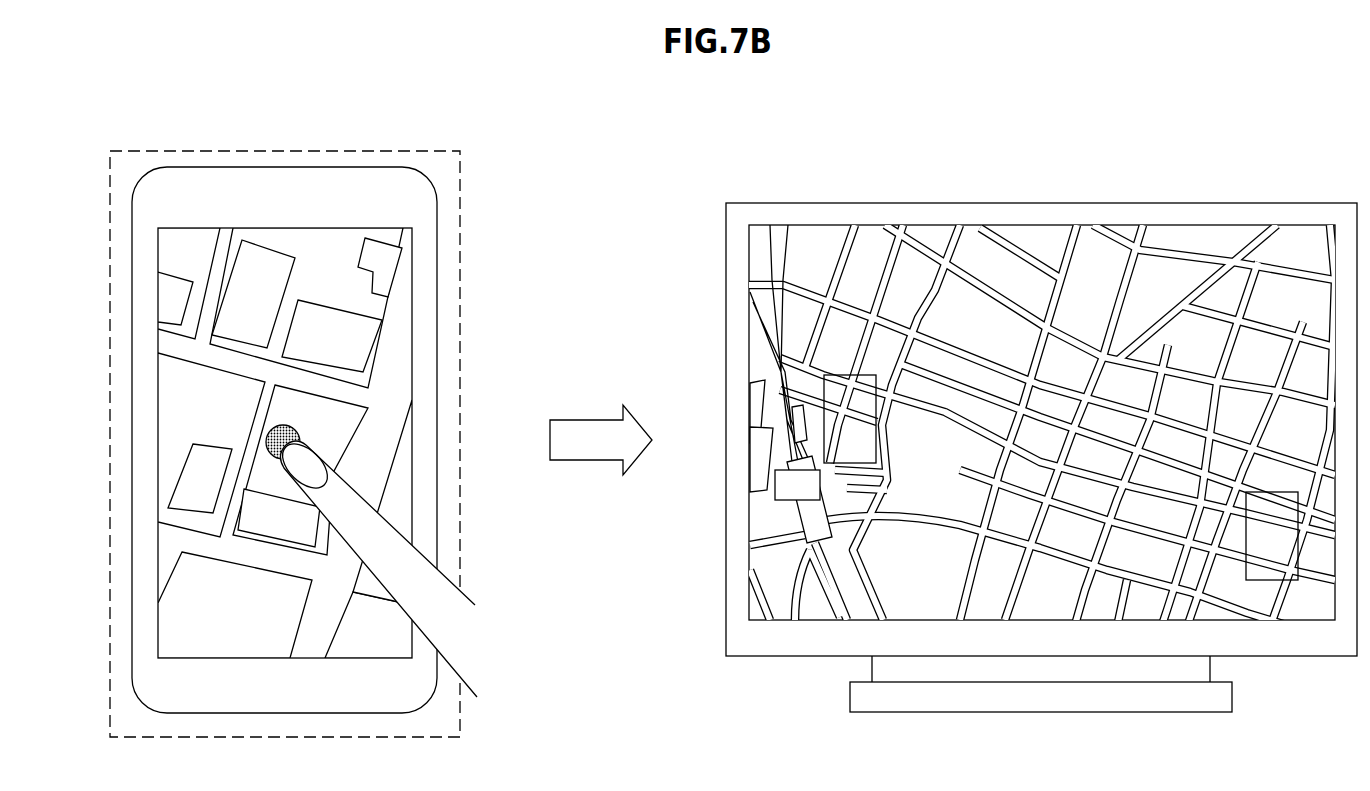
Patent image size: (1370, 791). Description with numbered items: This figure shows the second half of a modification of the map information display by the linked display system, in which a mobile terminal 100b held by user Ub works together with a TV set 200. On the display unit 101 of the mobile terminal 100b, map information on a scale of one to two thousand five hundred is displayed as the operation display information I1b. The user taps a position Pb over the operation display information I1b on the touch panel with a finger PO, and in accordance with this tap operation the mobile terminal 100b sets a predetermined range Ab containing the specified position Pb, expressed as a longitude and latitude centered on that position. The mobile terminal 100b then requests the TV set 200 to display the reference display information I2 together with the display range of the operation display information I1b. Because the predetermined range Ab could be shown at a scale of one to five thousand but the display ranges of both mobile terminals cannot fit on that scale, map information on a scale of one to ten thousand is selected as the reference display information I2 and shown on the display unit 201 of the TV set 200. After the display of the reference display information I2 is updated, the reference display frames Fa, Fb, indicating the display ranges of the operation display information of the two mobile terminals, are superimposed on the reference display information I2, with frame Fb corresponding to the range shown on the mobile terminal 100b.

The mobile terminal 100b is at (282, 167).
The display unit 101 is at (391, 227).
The operation display information I1b is at (397, 317).
The predetermined range Ab is at (460, 337).
The position Pb is at (266, 440).
The finger (pointing object) PO is at (387, 521).
The TV set 200 is at (1116, 203).
The display unit 201 is at (1237, 225).
The reference display information I2 is at (765, 269).
The reference display frame Fa is at (823, 418).
The reference display frame Fb is at (1289, 581).